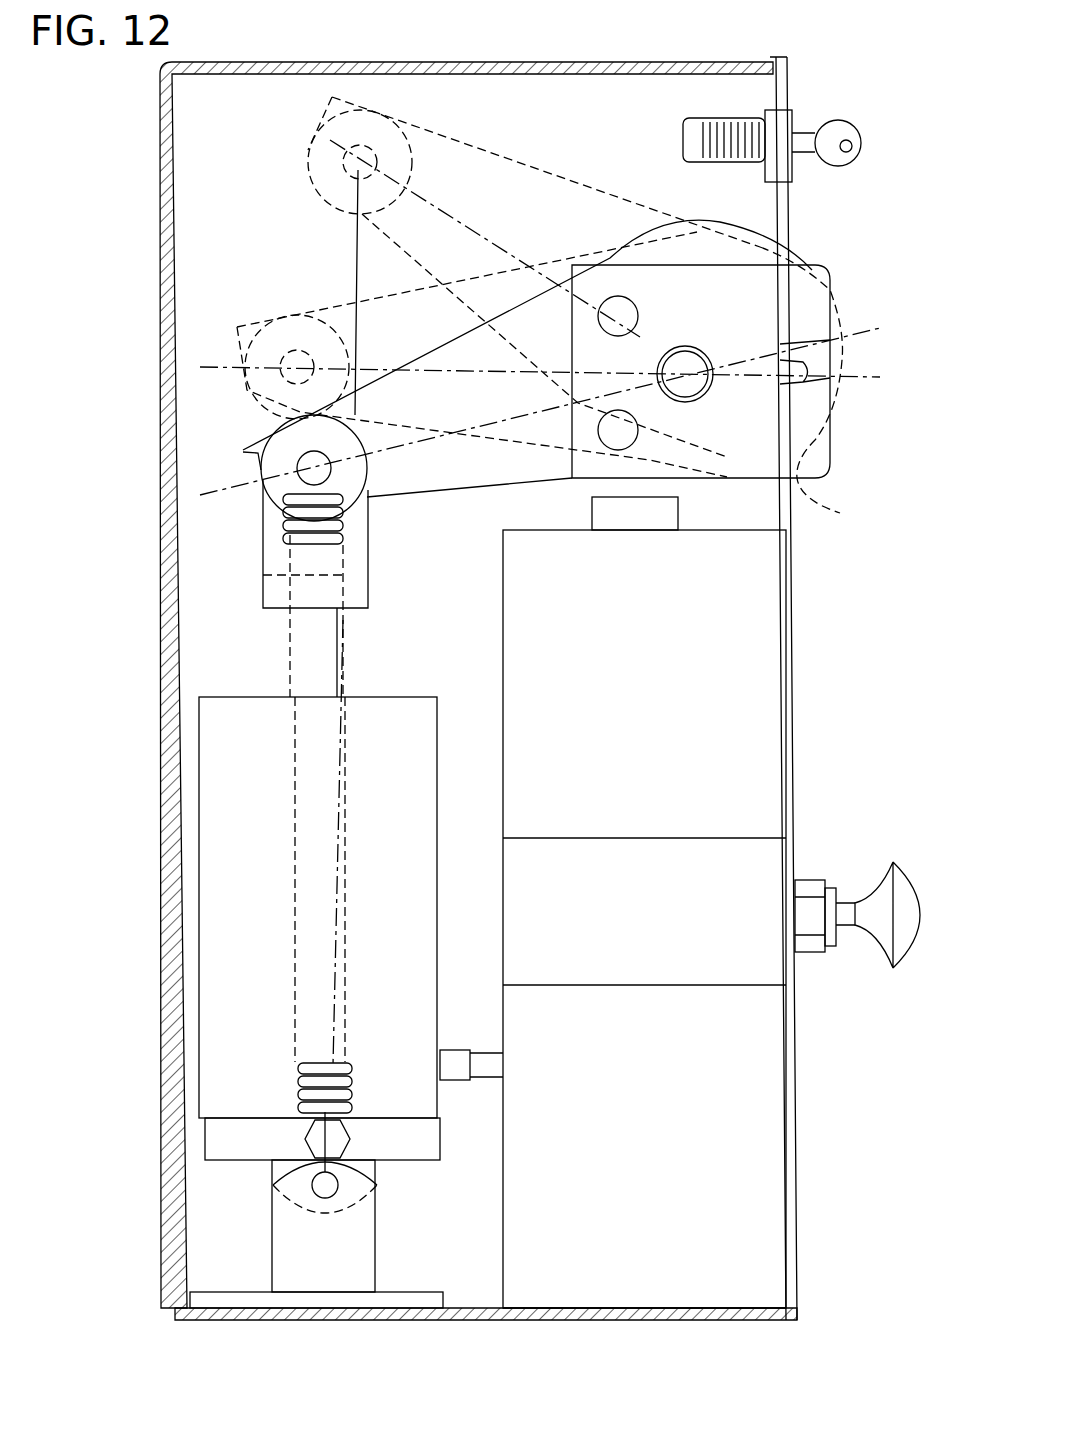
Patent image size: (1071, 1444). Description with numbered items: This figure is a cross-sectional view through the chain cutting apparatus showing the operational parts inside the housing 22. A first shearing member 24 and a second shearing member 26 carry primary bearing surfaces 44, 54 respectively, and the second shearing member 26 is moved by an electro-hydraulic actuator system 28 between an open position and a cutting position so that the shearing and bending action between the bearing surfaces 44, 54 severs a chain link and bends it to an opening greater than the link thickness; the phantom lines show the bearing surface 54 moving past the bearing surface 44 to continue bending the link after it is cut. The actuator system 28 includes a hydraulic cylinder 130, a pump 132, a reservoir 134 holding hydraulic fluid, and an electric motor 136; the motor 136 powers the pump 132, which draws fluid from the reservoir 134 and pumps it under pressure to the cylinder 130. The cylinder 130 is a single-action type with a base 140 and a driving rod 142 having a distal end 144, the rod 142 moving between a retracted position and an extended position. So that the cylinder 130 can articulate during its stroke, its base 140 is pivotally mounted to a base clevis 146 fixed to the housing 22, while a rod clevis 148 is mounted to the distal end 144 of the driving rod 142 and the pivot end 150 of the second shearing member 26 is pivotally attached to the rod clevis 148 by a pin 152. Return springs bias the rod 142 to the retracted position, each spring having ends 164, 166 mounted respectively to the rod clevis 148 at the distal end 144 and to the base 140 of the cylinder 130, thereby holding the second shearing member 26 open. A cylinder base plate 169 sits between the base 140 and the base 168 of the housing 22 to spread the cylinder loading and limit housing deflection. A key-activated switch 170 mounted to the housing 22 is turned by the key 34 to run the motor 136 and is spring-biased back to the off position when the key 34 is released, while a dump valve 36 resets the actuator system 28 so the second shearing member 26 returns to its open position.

The housing 22 is at (372, 1322).
The first shearing member 24 is at (823, 268).
The second shearing member 26 is at (467, 168).
The actuator system 28 is at (212, 641).
The key 34 is at (838, 158).
The dump valve 36 is at (903, 897).
The primary bearing surface 44 is at (830, 340).
The primary bearing surface 54 is at (640, 337).
The hydraulic cylinder 130 is at (235, 868).
The pump 132 is at (727, 968).
The reservoir 134 is at (760, 1160).
The electric motor 136 is at (765, 592).
The base 140 is at (245, 1003).
The driving rod 142 is at (300, 680).
The distal end 144 is at (320, 600).
The base clevis 146 is at (303, 1237).
The rod clevis 148 is at (277, 540).
The pivot end 150 is at (245, 452).
The pin 152 is at (300, 470).
The spring end 164 is at (287, 433).
The spring end 166 is at (317, 1123).
The base of the housing 168 is at (475, 1318).
The cylinder base plate 169 is at (323, 1303).
The key-activated switch 170 is at (793, 116).